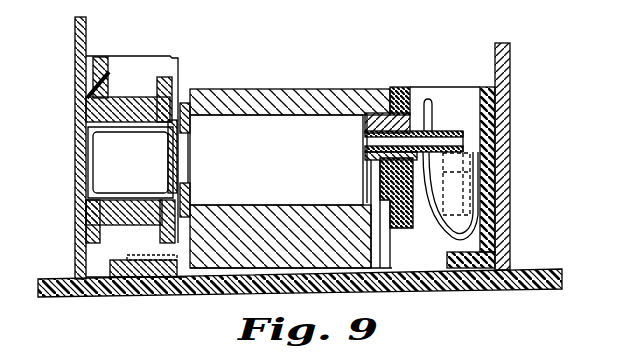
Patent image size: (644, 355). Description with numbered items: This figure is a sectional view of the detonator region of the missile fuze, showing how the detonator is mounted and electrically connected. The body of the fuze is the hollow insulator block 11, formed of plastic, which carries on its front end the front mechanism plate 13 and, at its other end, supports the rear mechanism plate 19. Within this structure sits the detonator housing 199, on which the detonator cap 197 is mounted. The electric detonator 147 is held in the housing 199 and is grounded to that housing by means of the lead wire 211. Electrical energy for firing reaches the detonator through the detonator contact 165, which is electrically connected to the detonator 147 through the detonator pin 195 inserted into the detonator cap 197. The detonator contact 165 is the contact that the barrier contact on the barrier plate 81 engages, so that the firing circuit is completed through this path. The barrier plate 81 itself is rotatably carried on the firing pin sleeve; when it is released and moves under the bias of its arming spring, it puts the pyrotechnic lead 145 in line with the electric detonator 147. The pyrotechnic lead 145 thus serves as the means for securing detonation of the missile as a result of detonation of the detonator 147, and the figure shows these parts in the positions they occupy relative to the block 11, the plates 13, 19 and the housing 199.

The insulator block 11 is at (174, 286).
The front mechanism plate 13 is at (504, 70).
The rear mechanism plate 19 is at (80, 52).
The barrier plate 81 is at (110, 72).
The pyrotechnic lead 145 is at (100, 163).
The electric detonator 147 is at (262, 132).
The detonator contact 165 is at (433, 212).
The detonator pin 195 is at (442, 132).
The detonator cap 197 is at (397, 90).
The detonator housing 199 is at (338, 102).
The lead wire 211 is at (368, 198).